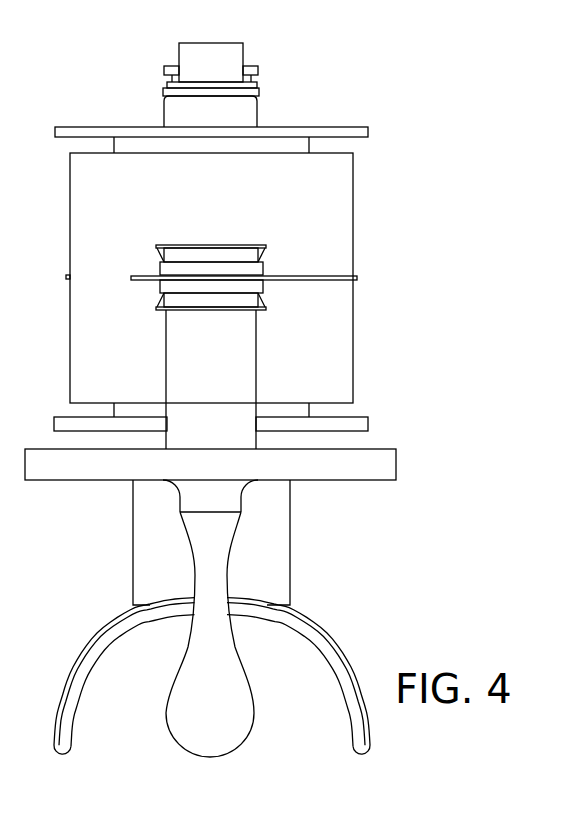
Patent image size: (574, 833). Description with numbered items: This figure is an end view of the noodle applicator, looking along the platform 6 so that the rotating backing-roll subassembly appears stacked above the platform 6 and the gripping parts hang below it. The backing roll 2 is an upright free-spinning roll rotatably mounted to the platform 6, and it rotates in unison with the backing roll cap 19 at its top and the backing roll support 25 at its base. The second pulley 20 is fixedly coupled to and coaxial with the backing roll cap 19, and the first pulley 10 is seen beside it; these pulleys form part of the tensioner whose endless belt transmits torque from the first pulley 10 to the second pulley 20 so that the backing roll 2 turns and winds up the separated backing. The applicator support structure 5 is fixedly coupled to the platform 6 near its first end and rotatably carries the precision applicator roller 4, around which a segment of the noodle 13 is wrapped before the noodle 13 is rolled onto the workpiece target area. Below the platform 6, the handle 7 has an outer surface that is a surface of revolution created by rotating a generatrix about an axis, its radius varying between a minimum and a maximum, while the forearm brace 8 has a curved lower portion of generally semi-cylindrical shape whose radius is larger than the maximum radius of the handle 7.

The backing roll 2 is at (66, 208).
The backing roll cap 19 is at (347, 127).
The second pulley 20 is at (179, 57).
The first pulley 10 is at (258, 67).
The precision applicator roller 4 is at (217, 256).
The noodle 13 is at (330, 273).
The applicator support structure 5 is at (293, 330).
The backing roll support 25 is at (368, 424).
The platform 6 is at (396, 465).
The handle 7 is at (235, 540).
The forearm brace 8 is at (327, 637).